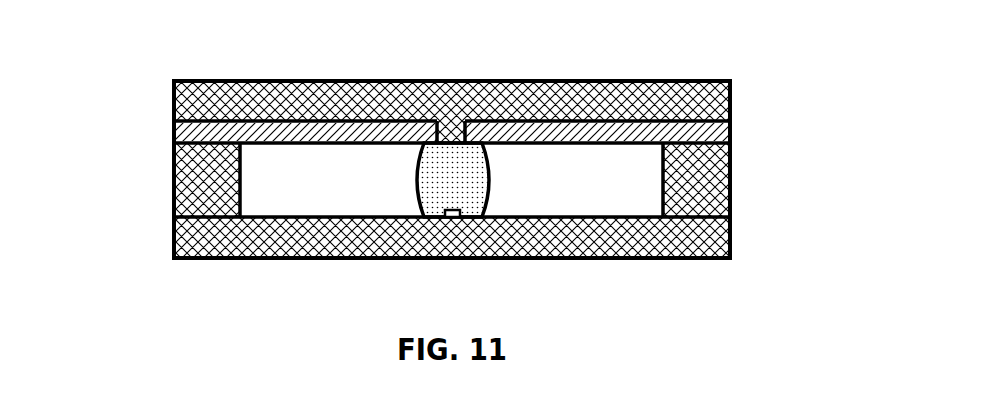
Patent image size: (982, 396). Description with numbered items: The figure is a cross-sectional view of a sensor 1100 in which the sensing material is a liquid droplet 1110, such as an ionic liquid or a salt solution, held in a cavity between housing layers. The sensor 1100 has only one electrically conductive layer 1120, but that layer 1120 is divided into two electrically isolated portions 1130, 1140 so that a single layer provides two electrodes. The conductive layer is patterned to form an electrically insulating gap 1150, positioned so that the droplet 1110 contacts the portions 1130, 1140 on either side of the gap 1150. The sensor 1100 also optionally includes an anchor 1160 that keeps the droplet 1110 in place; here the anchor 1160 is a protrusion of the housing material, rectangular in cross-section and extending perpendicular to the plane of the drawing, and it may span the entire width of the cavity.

The sensor 1100 is at (158, 62).
The liquid droplet 1110 is at (415, 183).
The electrically conductive layer 1120 is at (733, 125).
The first electrically isolated portion 1130 is at (290, 80).
The second electrically isolated portion 1140 is at (548, 80).
The electrically insulating gap 1150 is at (452, 118).
The anchor 1160 is at (467, 213).